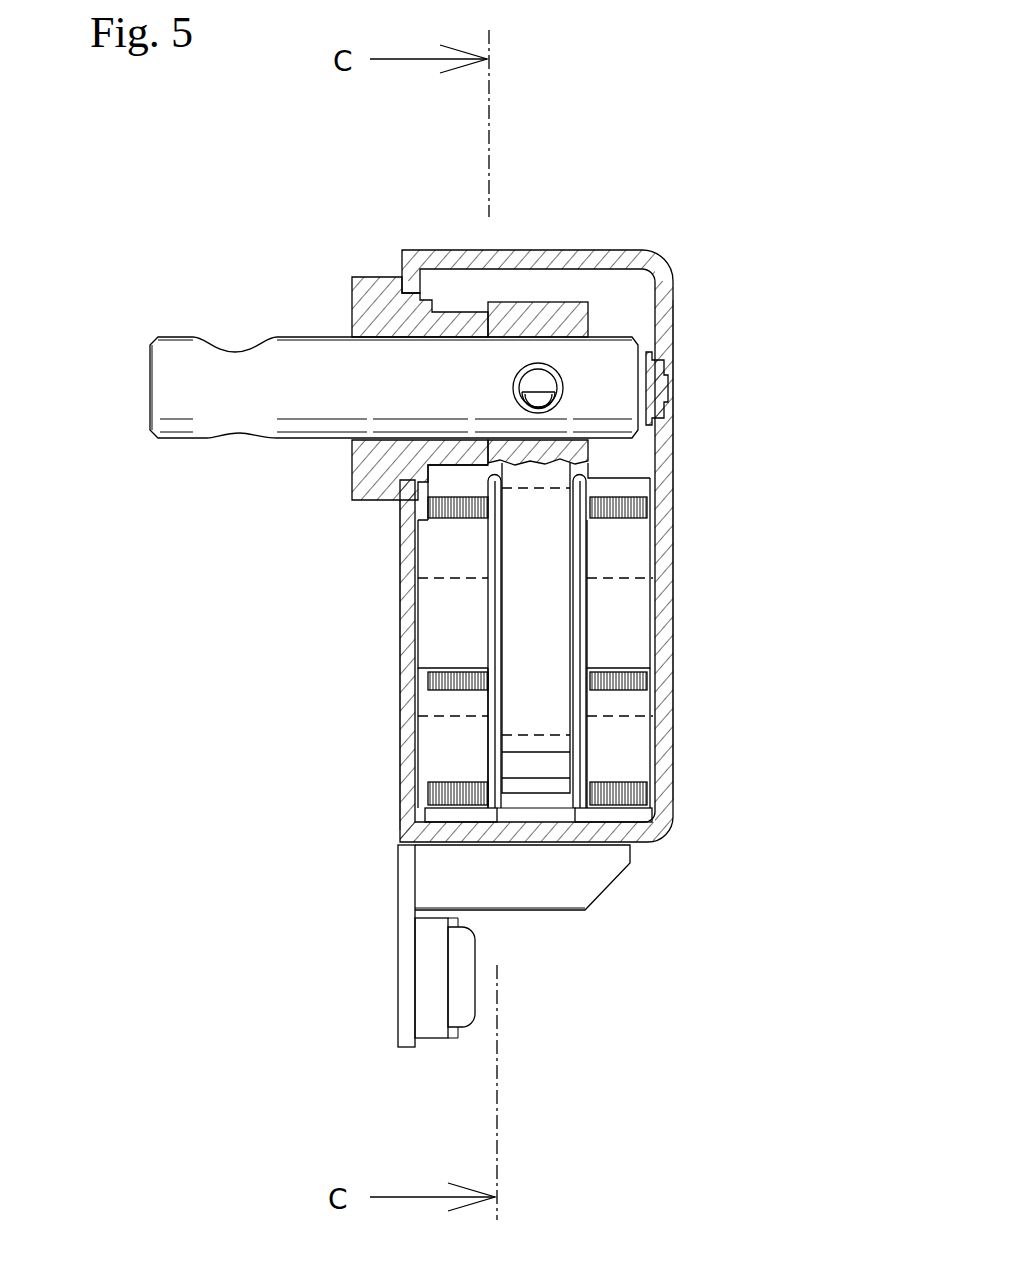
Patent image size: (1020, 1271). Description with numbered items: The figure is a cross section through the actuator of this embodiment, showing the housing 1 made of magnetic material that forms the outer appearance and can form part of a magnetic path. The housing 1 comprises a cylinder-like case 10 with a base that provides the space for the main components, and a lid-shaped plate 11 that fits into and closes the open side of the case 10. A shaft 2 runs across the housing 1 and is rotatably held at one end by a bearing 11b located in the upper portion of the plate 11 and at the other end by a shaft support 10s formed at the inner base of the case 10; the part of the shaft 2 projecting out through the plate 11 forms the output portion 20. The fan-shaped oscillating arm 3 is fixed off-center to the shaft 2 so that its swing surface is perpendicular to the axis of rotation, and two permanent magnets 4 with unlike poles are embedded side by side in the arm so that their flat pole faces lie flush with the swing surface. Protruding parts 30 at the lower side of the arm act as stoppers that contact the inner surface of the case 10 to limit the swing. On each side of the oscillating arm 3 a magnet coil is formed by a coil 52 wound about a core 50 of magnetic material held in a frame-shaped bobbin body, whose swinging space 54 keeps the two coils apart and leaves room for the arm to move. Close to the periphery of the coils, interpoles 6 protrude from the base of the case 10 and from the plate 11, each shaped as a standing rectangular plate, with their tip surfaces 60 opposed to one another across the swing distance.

The housing 1 is at (518, 253).
The shaft 2 is at (287, 363).
The oscillating arm 3 is at (568, 323).
The permanent magnet 4 is at (550, 689).
The interpole 6 is at (620, 570).
The case 10 is at (667, 480).
The shaft support 10s is at (662, 393).
The plate 11 is at (402, 575).
The bearing 11b is at (363, 298).
The output portion 20 is at (176, 398).
The protruding part 30 is at (528, 776).
The core 50 is at (593, 712).
The coil 52 is at (445, 753).
The swinging space 54 is at (557, 800).
The tip surface 60 is at (579, 596).